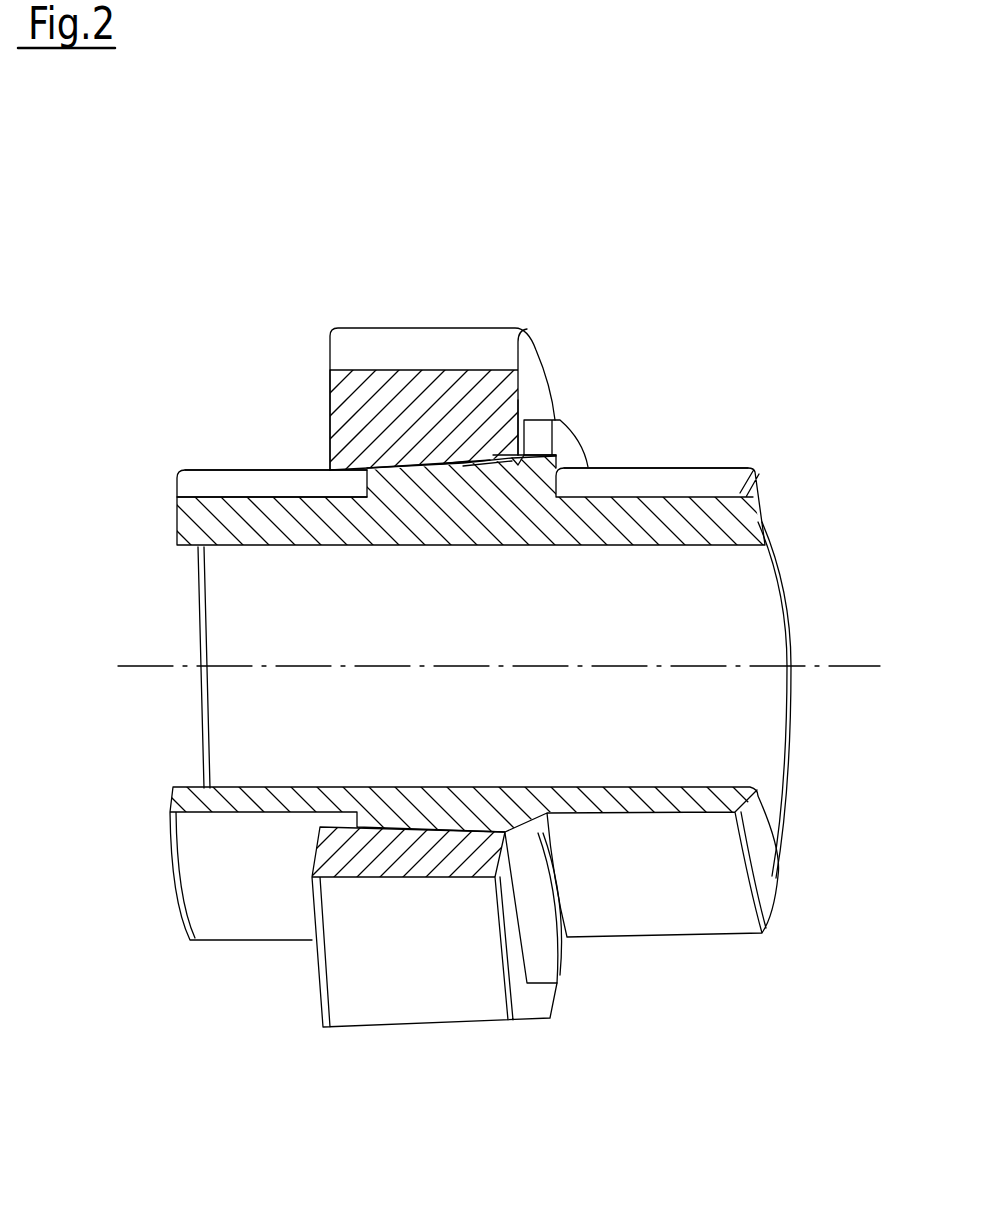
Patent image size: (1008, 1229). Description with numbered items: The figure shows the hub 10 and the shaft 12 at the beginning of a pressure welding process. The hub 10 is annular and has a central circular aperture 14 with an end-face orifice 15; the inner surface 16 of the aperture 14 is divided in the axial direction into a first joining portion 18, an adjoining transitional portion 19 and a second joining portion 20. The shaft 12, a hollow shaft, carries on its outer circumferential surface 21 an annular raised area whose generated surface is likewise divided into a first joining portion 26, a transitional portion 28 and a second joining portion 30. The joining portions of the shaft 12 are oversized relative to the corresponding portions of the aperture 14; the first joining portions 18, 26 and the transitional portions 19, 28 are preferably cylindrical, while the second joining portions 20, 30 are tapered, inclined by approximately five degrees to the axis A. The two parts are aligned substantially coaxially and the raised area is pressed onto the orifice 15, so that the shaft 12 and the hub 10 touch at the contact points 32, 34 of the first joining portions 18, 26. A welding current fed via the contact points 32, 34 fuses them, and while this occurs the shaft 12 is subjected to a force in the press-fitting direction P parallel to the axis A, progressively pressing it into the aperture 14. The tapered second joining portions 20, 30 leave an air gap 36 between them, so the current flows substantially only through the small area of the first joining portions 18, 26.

The hub 10 is at (368, 403).
The shaft 12 is at (670, 527).
The aperture 14 is at (352, 487).
The end-face orifice 15 is at (537, 410).
The inner surface 16 is at (437, 823).
The first joining portion 18 is at (470, 460).
The transitional portion 19 is at (465, 452).
The second joining portion 20 is at (378, 462).
The outer circumferential surface 21 is at (622, 483).
The first joining portion 26 is at (530, 456).
The transitional portion 28 is at (508, 463).
The second joining portion 30 is at (435, 467).
The contact point 32 is at (507, 440).
The contact point 34 is at (518, 466).
The air gap 36 is at (330, 440).
The axis A is at (842, 660).
The press-fitting direction P is at (730, 1040).